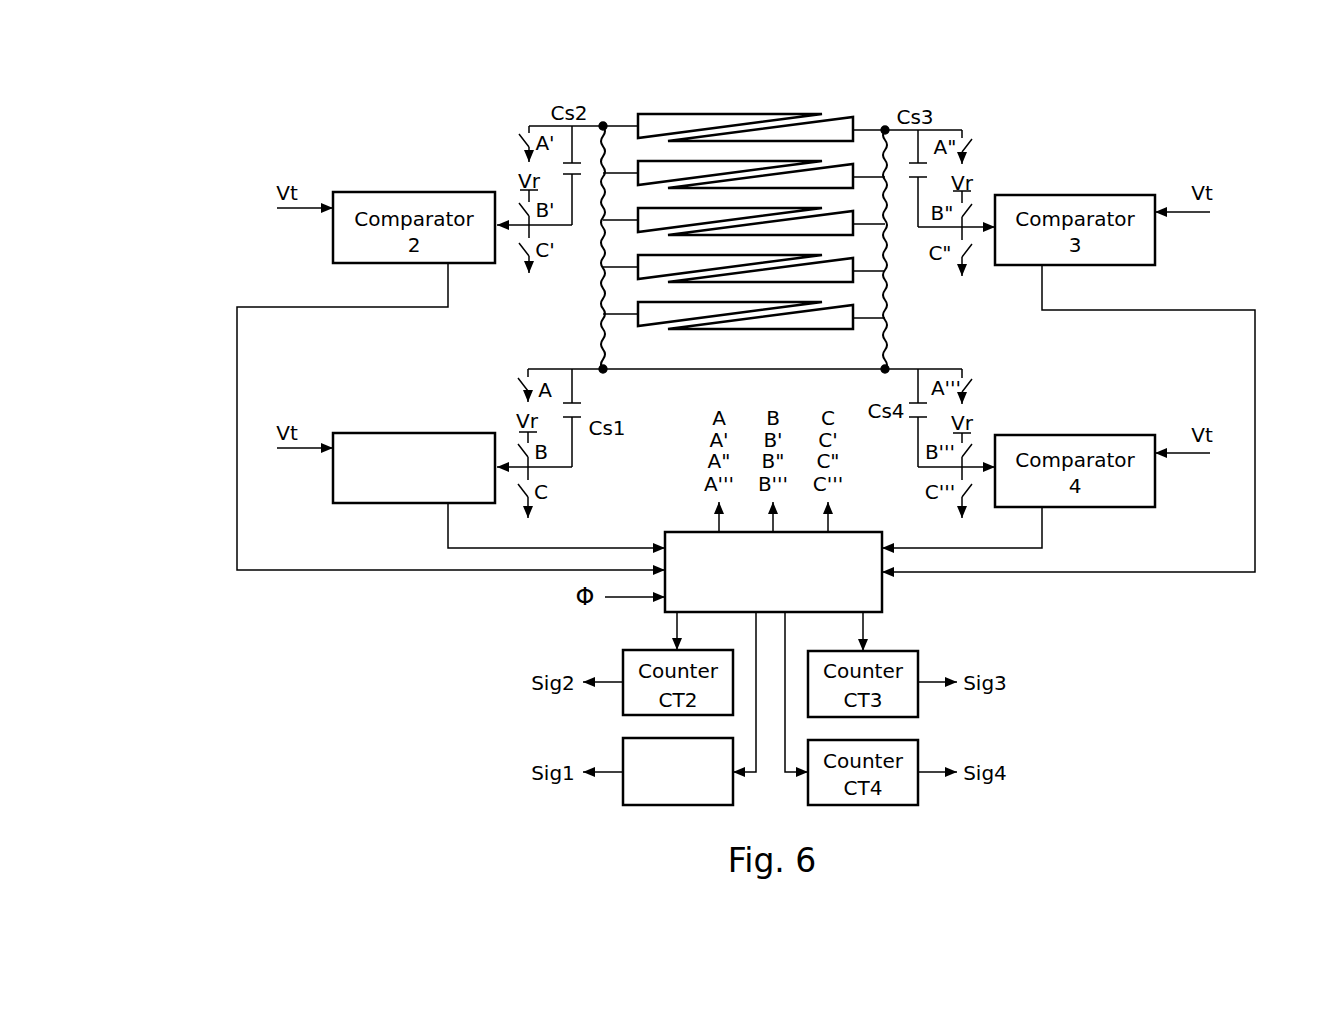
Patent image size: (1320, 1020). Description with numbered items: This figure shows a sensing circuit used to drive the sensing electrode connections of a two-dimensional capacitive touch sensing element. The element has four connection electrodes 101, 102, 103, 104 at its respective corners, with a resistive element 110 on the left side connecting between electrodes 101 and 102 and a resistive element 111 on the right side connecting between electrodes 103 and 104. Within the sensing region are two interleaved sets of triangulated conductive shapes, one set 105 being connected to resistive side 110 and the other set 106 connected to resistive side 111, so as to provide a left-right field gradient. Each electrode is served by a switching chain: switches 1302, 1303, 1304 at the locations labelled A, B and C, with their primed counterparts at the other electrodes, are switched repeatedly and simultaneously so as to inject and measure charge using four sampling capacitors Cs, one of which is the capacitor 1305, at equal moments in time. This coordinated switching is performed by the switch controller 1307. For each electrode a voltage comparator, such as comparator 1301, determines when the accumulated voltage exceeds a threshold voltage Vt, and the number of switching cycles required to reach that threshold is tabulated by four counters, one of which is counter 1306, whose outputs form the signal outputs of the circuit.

The connection electrode 101 is at (606, 124).
The connection electrode 102 is at (600, 365).
The connection electrode 103 is at (882, 128).
The connection electrode 104 is at (889, 365).
The set of triangulated conductive shapes 105 is at (648, 313).
The set of triangulated conductive shapes 106 is at (787, 318).
The resistive element 110 is at (600, 250).
The resistive element 111 is at (888, 287).
The voltage comparator 1301 is at (382, 503).
The switch 1302 is at (523, 382).
The switch 1303 is at (550, 450).
The switch 1304 is at (550, 488).
The sampling capacitor 1305 is at (582, 410).
The counter 1306 is at (622, 750).
The switch controller 1307 is at (882, 595).